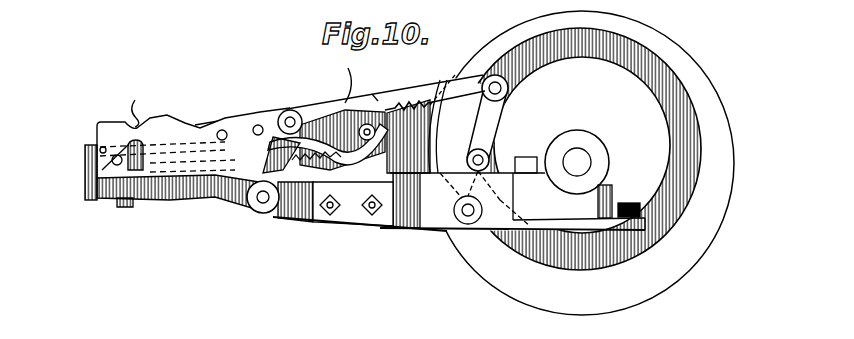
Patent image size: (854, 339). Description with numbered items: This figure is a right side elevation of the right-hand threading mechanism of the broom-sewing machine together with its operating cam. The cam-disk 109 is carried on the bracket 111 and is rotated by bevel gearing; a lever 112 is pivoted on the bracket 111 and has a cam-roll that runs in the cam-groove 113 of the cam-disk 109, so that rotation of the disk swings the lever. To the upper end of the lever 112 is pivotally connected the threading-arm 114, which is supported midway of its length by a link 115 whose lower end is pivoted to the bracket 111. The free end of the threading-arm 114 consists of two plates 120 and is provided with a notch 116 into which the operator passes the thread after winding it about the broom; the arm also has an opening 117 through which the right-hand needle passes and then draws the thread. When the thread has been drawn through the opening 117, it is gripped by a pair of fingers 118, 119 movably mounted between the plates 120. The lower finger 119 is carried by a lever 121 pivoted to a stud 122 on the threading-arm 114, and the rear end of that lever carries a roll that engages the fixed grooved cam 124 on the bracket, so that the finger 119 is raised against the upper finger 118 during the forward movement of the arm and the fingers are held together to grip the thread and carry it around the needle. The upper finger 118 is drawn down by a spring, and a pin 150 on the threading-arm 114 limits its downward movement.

The cam-disk 109 is at (692, 245).
The bracket 111 is at (412, 178).
The lever 112 is at (487, 127).
The cam-groove 113 is at (687, 128).
The threading-arm 114 is at (340, 97).
The link 115 is at (314, 127).
The notch 116 is at (193, 131).
The opening 117 is at (115, 161).
The upper finger 118 is at (187, 142).
The lower finger 119 is at (178, 193).
The plates 120 is at (227, 207).
The lever 121 is at (378, 112).
The stud 122 is at (288, 118).
The fixed grooved cam 124 is at (353, 158).
The pin 150 is at (100, 148).